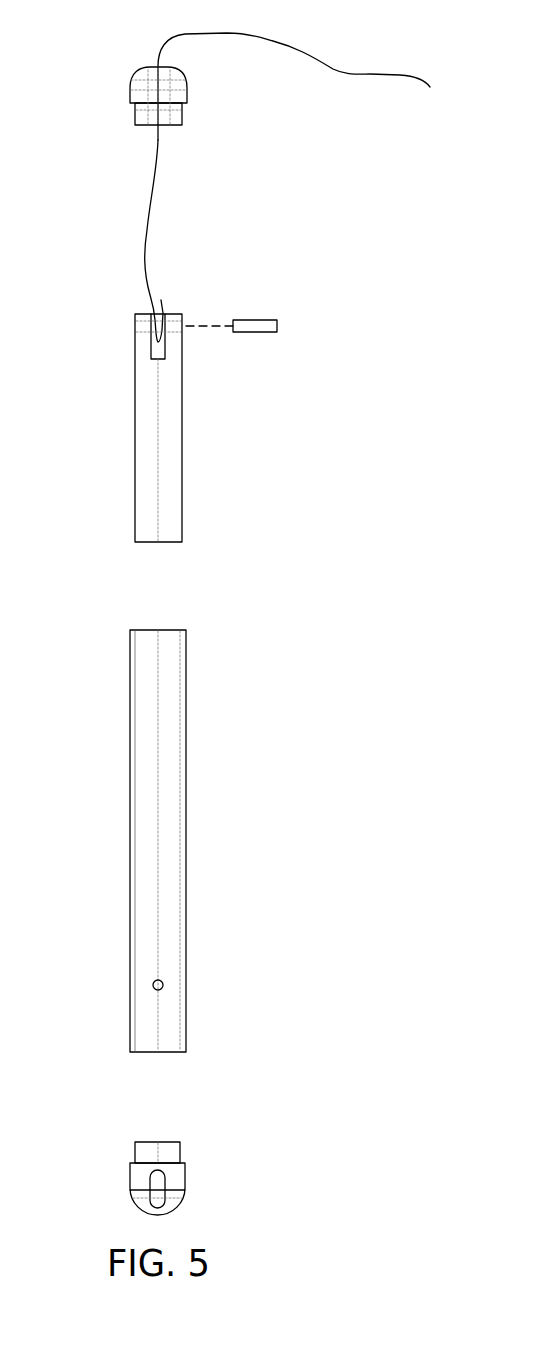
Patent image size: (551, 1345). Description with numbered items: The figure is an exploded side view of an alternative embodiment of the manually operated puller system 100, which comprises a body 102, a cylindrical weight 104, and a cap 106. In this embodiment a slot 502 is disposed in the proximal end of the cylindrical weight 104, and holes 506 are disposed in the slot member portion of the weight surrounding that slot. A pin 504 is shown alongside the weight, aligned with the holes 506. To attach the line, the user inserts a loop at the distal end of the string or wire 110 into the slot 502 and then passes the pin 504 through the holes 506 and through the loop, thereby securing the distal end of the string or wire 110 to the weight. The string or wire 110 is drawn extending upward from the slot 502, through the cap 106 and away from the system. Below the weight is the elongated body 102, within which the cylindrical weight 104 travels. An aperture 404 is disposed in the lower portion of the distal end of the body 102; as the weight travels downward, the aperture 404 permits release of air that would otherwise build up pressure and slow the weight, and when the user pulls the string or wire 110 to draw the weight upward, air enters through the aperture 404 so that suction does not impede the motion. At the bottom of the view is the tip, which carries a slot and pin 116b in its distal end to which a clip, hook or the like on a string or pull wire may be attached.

The puller system 100 is at (52, 485).
The body 102 is at (130, 855).
The weight 104 is at (135, 449).
The cap 106 is at (187, 83).
The string or wire 110 is at (265, 35).
The slot and pin 116b is at (185, 1180).
The aperture 404 is at (153, 985).
The slot 502 is at (166, 302).
The pin 504 is at (257, 320).
The holes 506 is at (125, 324).